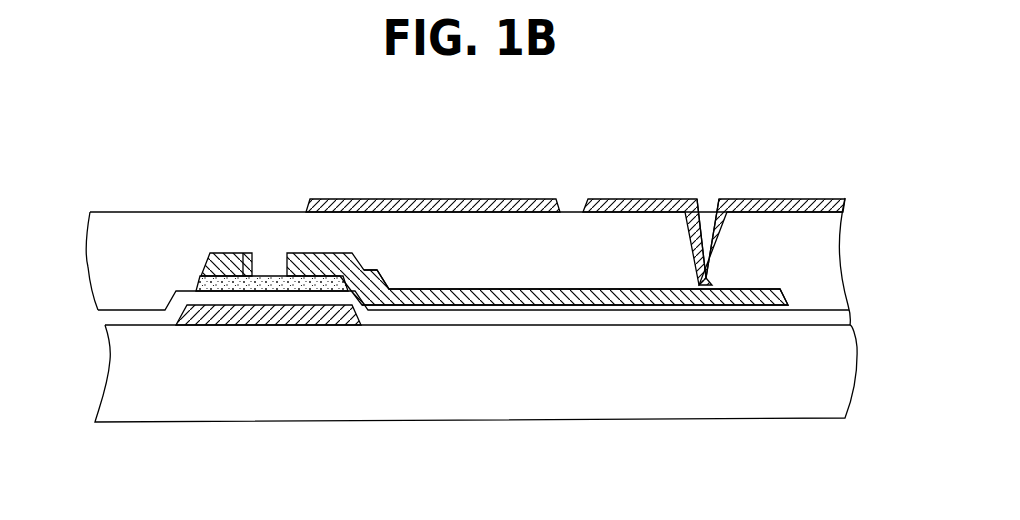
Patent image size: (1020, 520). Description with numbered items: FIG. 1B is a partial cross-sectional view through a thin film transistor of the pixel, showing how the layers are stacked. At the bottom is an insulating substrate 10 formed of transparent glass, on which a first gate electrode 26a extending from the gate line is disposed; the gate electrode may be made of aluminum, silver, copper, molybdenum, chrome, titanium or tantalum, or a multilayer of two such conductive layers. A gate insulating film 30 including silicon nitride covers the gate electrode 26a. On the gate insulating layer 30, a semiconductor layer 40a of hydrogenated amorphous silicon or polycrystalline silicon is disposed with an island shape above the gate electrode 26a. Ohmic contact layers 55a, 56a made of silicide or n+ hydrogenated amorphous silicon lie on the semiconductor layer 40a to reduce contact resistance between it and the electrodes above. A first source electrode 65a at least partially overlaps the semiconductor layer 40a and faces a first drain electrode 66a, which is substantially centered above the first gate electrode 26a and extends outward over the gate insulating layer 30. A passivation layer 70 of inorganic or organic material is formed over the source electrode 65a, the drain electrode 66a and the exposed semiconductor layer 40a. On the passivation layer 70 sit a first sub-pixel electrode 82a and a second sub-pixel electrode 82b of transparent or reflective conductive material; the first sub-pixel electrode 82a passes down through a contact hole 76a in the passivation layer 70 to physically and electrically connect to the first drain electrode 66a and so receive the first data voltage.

The insulating substrate 10 is at (695, 402).
The gate insulating film 30 is at (606, 316).
The passivation layer 70 is at (510, 270).
The first gate electrode 26a is at (287, 313).
The semiconductor layer 40a is at (221, 283).
The ohmic contact layer 55a is at (243, 253).
The first source electrode 65a is at (227, 253).
The ohmic contact layer 56a is at (315, 253).
The first drain electrode 66a is at (430, 300).
The first sub-pixel electrode 82a is at (642, 199).
The second sub-pixel electrode 82b is at (470, 199).
The contact hole 76a is at (705, 212).